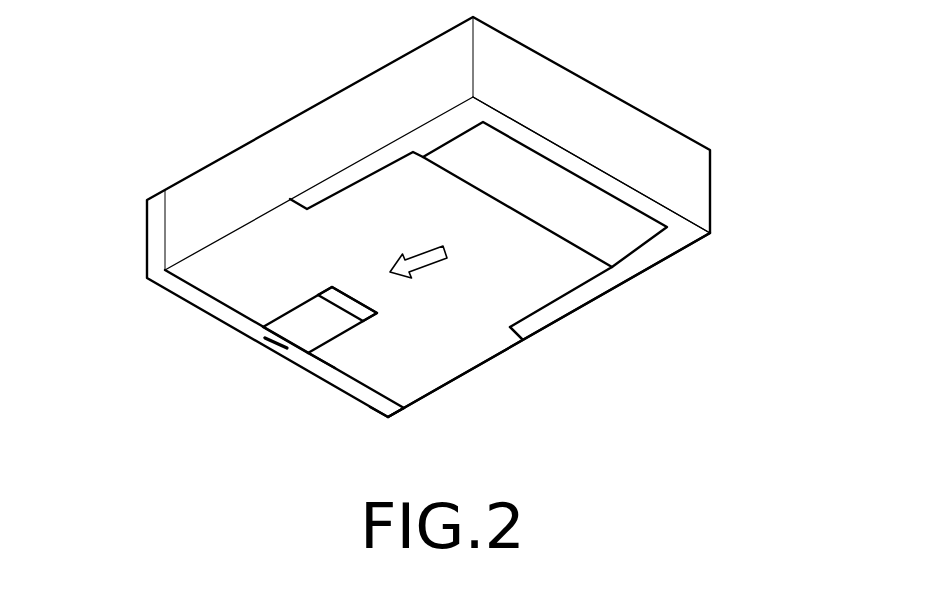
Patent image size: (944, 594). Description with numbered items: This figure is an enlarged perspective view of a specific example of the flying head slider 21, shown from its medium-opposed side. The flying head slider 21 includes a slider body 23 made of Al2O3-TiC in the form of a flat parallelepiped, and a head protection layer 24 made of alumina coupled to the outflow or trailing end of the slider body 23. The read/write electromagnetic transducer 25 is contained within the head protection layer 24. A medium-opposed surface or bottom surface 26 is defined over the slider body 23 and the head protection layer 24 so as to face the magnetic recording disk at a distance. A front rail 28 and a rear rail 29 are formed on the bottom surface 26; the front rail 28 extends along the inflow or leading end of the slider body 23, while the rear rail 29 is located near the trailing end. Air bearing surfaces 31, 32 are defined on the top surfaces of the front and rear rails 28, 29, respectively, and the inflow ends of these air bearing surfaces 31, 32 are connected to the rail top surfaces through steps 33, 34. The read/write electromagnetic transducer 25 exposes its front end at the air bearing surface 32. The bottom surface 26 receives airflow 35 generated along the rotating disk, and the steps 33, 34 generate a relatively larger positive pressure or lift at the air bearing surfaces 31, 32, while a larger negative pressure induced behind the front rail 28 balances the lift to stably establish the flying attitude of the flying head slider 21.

The flying head slider 21 is at (293, 115).
The slider body 23 is at (437, 390).
The head protection layer 24 is at (389, 412).
The read/write electromagnetic transducer 25 is at (268, 349).
The bottom surface 26 is at (496, 333).
The front rail 28 is at (670, 208).
The rear rail 29 is at (322, 340).
The air bearing surface 31 is at (528, 207).
The air bearing surface 32 is at (298, 312).
The step 33 is at (553, 163).
The step 34 is at (341, 303).
The airflow 35 is at (418, 256).